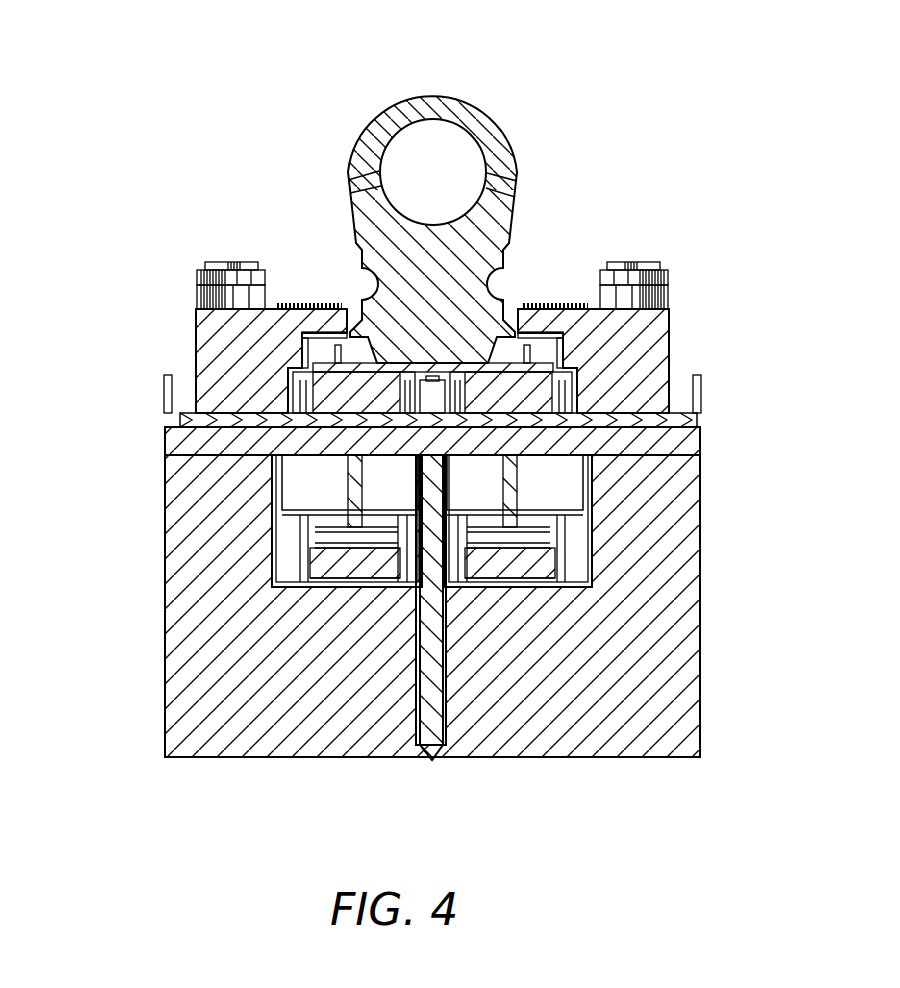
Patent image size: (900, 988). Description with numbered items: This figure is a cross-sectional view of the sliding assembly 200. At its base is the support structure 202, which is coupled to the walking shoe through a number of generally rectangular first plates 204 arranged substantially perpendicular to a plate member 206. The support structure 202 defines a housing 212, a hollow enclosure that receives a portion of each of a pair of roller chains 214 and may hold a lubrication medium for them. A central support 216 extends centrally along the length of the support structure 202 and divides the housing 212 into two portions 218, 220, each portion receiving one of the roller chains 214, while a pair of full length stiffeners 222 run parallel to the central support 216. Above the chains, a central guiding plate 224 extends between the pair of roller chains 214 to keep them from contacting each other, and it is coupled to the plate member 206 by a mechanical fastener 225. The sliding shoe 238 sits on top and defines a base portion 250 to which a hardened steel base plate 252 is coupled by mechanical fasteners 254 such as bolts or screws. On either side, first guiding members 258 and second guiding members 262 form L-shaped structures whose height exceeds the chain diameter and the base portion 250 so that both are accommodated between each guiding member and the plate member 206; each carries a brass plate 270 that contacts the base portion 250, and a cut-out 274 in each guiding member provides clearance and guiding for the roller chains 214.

The sliding assembly 200 is at (832, 228).
The support structure 202 is at (160, 448).
The first plates 204 is at (668, 705).
The plate member 206 is at (668, 419).
The housing 212 is at (597, 565).
The roller chains 214 is at (320, 580).
The central support 216 is at (416, 718).
The first portion of the housing 218 is at (283, 548).
The second portion of the housing 220 is at (589, 548).
The full length stiffeners 222 is at (355, 500).
The central guiding plate 224 is at (182, 418).
The mechanical fastener 225 is at (431, 378).
The sliding shoe 238 is at (542, 117).
The base portion 250 is at (496, 348).
The base plate 252 is at (552, 366).
The mechanical fasteners 254 is at (322, 337).
The first guiding members 258 is at (184, 320).
The second guiding members 262 is at (688, 315).
The plate 270 is at (310, 347).
The cut-out 274 is at (280, 388).